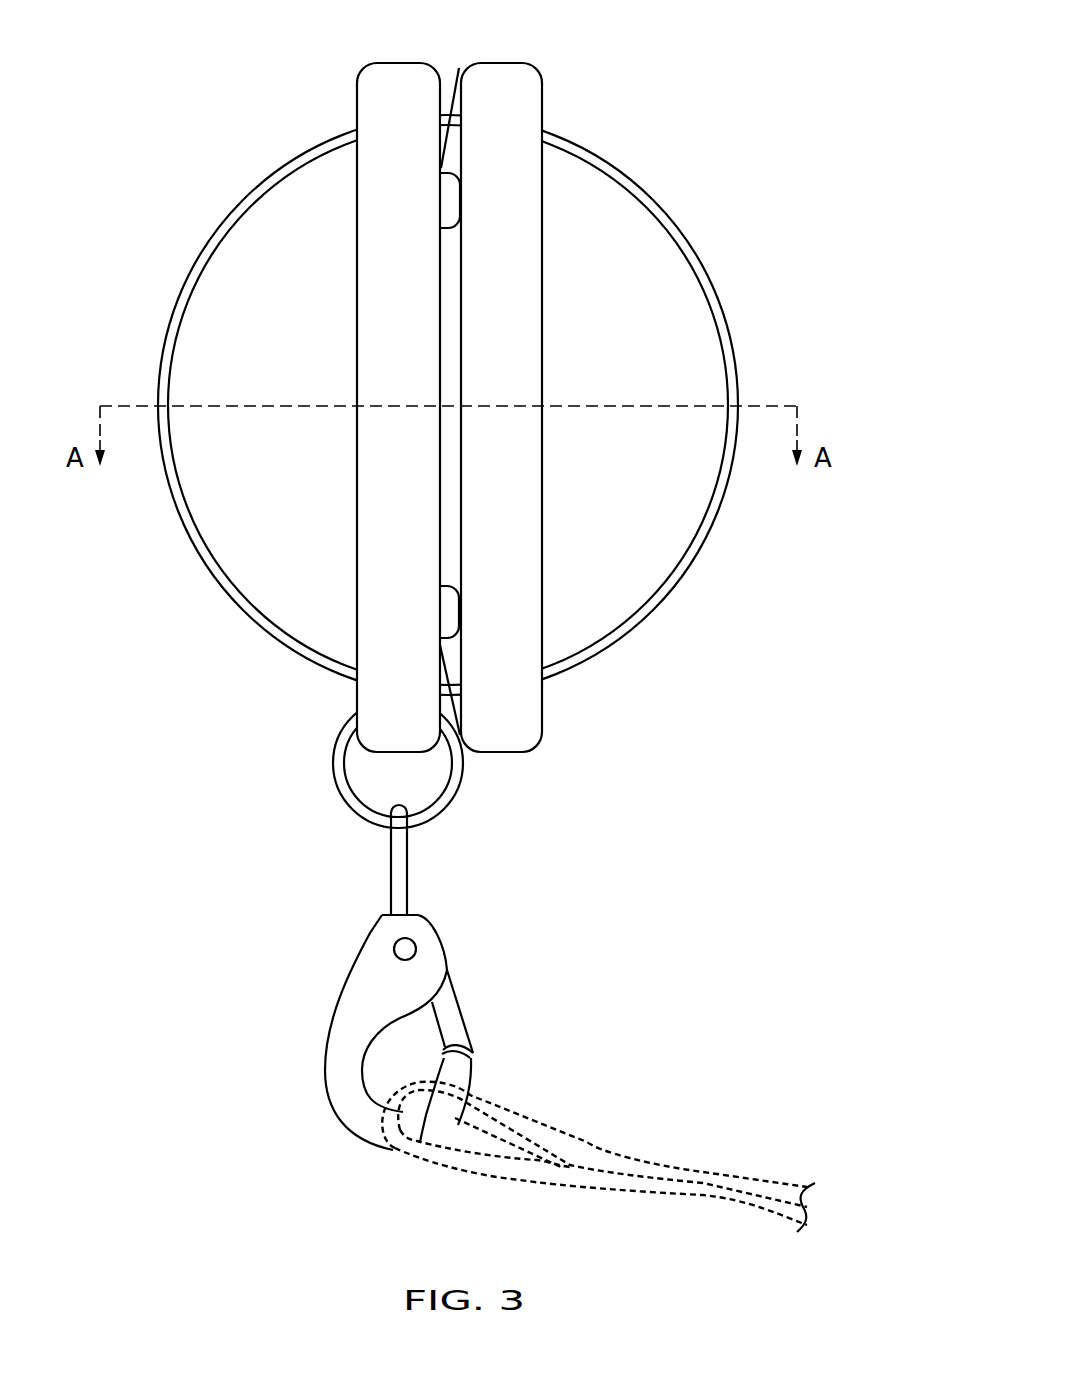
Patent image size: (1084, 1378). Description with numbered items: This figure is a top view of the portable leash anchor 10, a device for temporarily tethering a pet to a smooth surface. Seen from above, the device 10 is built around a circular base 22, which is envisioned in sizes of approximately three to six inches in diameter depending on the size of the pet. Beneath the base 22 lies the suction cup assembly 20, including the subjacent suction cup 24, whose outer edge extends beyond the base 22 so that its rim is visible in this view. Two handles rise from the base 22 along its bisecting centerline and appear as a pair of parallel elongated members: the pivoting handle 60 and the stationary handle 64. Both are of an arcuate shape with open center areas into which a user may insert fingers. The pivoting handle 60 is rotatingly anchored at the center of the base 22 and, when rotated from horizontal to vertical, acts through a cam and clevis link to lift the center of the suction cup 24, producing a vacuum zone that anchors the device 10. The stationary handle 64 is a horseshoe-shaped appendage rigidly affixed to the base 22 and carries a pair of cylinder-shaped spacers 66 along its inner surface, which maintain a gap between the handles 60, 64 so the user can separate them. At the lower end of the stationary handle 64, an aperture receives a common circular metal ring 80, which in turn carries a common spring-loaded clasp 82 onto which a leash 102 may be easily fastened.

The portable leash anchor 10 is at (679, 45).
The suction cup assembly 20 is at (707, 550).
The circular base 22 is at (722, 315).
The suction cup 24 is at (702, 250).
The pivoting handle 60 is at (397, 270).
The stationary handle 64 is at (515, 268).
The spacers 66 is at (450, 202).
The circular metal ring 80 is at (453, 798).
The spring-loaded clasp 82 is at (393, 975).
The leash 102 is at (537, 1127).